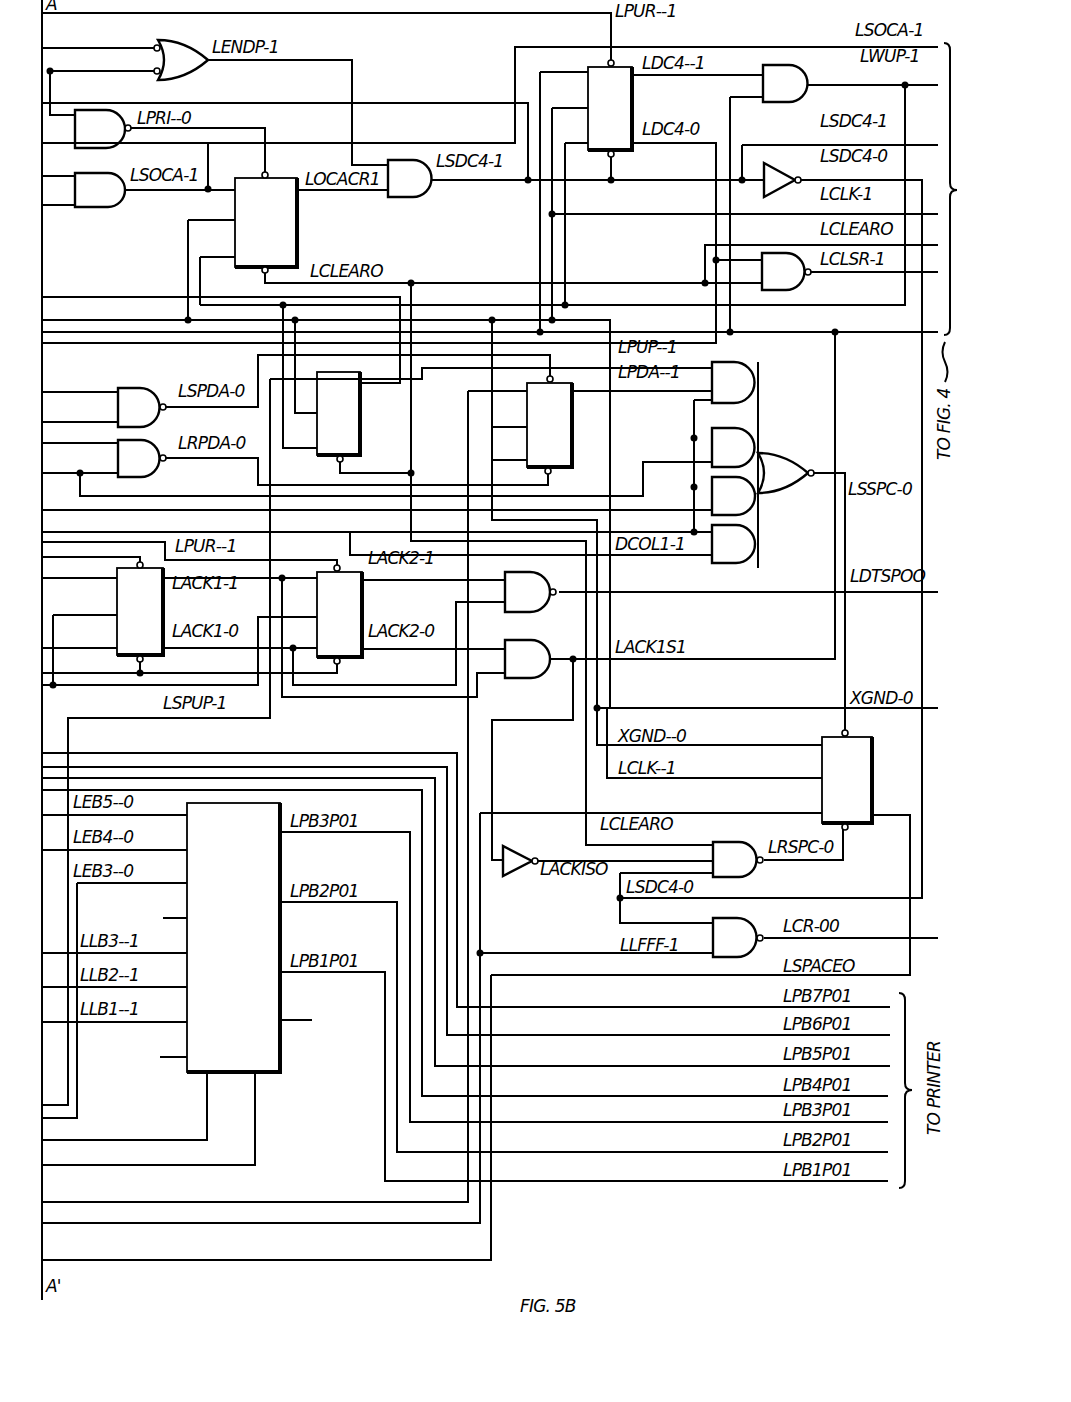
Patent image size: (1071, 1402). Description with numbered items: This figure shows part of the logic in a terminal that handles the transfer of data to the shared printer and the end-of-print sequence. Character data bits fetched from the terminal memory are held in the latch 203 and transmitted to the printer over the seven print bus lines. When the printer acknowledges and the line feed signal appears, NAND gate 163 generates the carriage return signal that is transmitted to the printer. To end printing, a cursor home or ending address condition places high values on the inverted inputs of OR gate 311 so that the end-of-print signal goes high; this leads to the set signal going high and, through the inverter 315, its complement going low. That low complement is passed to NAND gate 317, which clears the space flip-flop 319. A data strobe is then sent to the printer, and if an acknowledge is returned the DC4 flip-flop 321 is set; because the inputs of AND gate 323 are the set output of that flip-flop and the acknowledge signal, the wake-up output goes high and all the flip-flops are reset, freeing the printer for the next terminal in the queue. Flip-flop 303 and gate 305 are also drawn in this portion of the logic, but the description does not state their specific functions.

The OR gate 311 is at (166, 42).
The DC4 flip-flop 321 is at (632, 98).
The AND gate 323 is at (805, 96).
The inverter 315 is at (772, 186).
The space detect NAND gate 305 is at (146, 390).
The LPDA flip-flop 303 is at (556, 476).
The space flip-flop 319 is at (860, 781).
The NAND gate 317 is at (757, 874).
The NAND gate 163 is at (713, 920).
The latch 203 is at (280, 1055).